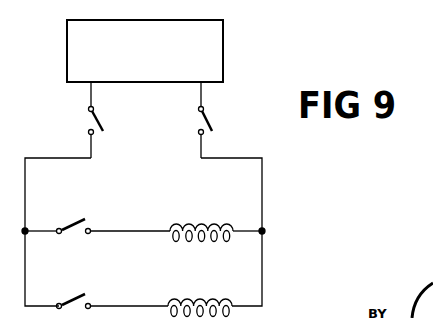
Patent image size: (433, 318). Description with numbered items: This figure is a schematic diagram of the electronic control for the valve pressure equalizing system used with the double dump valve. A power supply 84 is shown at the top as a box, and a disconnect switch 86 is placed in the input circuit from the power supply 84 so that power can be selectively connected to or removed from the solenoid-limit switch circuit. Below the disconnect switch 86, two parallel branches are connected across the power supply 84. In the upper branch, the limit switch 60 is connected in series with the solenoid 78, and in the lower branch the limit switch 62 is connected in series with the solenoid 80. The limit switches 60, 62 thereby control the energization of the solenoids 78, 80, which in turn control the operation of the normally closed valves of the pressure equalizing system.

The power supply 84 is at (223, 67).
The disconnect switch 86 is at (91, 115).
The limit switch 60 is at (75, 224).
The limit switch 62 is at (82, 297).
The solenoid 78 is at (191, 226).
The solenoid 80 is at (199, 300).